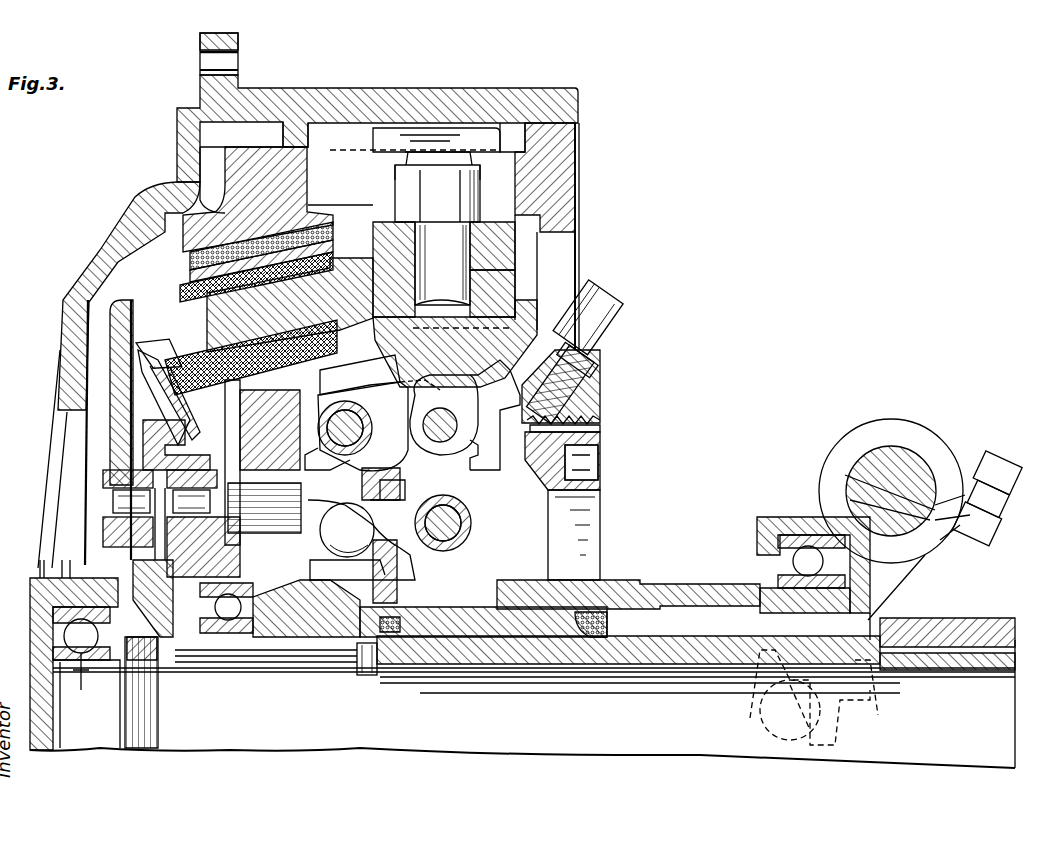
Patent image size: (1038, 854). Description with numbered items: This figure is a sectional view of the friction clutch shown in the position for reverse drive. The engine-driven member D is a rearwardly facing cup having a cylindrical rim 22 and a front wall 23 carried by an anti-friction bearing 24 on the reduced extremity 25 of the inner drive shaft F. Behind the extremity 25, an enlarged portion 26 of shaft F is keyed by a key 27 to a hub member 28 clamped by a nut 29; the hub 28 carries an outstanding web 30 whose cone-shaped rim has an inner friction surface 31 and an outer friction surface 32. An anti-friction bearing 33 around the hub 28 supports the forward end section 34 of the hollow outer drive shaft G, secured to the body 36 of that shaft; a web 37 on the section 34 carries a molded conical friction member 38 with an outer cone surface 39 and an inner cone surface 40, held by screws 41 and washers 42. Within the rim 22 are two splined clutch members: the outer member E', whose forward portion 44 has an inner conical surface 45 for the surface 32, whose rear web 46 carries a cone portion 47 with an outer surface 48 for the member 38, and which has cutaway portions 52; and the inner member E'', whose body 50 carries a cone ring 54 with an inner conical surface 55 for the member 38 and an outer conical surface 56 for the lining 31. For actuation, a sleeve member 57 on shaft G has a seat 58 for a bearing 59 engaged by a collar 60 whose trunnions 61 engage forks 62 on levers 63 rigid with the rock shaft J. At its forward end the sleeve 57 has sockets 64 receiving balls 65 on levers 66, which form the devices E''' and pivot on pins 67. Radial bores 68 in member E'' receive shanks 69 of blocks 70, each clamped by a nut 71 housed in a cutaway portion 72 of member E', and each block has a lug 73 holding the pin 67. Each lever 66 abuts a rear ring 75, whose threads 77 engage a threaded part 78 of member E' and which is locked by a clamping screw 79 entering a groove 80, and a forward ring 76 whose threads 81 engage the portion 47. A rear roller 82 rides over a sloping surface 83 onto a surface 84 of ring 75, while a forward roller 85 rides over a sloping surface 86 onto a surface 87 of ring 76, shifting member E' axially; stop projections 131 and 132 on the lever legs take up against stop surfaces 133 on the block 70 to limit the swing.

The engine-driven member D is at (226, 40).
The cylindrical rim 22 is at (272, 95).
The front wall 23 is at (60, 445).
The anti-friction bearing 24 is at (81, 661).
The forward reduced extremity 25 is at (90, 740).
The enlarged portion 26 is at (236, 745).
The key 27 is at (338, 660).
The hub member 28 is at (310, 640).
The nut 29 is at (140, 650).
The outstanding web 30 is at (112, 300).
The inner friction surface 31 is at (205, 296).
The outer friction surface 32 is at (195, 256).
The anti-friction bearing 33 is at (222, 633).
The forward end section 34 is at (568, 637).
The body of shaft G 36 is at (740, 655).
The outstanding web 37 is at (112, 425).
The conical friction member 38 is at (120, 396).
The outer cone friction surface 39 is at (200, 345).
The inner cone friction surface 40 is at (332, 326).
The screws 41 is at (150, 350).
The washers 42 is at (140, 368).
The forward portion 44 is at (232, 155).
The inner conical surface 45 is at (214, 235).
The rear portion 46 is at (565, 180).
The cone friction member 47 is at (441, 343).
The outer cone friction surface 48 is at (260, 427).
The body 50 is at (500, 282).
The cutaway portions 52 is at (322, 160).
The cone ring 54 is at (200, 262).
The inner conical surface 55 is at (408, 335).
The outer conical surface 56 is at (345, 262).
The sleeve member 57 is at (702, 590).
The seat 58 is at (765, 588).
The anti-friction bearing 59 is at (796, 556).
The collar 60 is at (765, 518).
The trunnions 61 is at (840, 738).
The forks 62 is at (868, 718).
The levers 63 is at (893, 588).
The sockets 64 is at (400, 566).
The balls 65 is at (347, 545).
The levers 66 is at (376, 432).
The pivot pins 67 is at (458, 426).
The radial bores 68 is at (515, 255).
The shanks 69 is at (448, 265).
The blocks 70 is at (585, 310).
The nut 71 is at (418, 203).
The cutaway portion 72 is at (500, 170).
The lug 73 is at (462, 433).
The ring-like part 75 is at (600, 484).
The ringlike member 76 is at (233, 461).
The external screw threads 77 is at (590, 416).
The part of member E' 78 is at (590, 394).
The clamping screw 79 is at (603, 343).
The groove 80 is at (600, 428).
The external screw threads 81 is at (262, 445).
The roller 82 is at (466, 540).
The sloping surface 83 is at (548, 492).
The surface 84 is at (545, 485).
The roller 85 is at (372, 430).
The sloping surface 86 is at (340, 468).
The surface 87 is at (345, 446).
The stop projection 131 is at (398, 380).
The stop projection 132 is at (474, 458).
The stop surfaces 133 is at (404, 390).
The outer clutch member E' is at (592, 145).
The inner clutch member E'' is at (592, 198).
The inwardly extending members E''' is at (480, 475).
The inner drive shaft F is at (722, 740).
The hollow outer drive shaft G is at (705, 680).
The rock shaft J is at (895, 460).